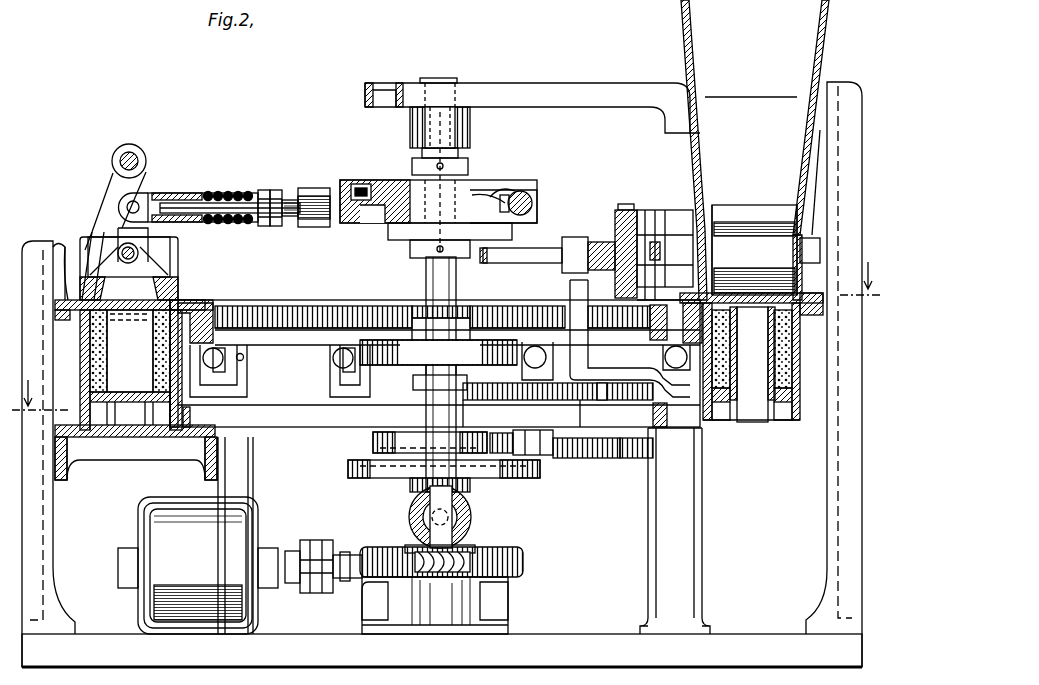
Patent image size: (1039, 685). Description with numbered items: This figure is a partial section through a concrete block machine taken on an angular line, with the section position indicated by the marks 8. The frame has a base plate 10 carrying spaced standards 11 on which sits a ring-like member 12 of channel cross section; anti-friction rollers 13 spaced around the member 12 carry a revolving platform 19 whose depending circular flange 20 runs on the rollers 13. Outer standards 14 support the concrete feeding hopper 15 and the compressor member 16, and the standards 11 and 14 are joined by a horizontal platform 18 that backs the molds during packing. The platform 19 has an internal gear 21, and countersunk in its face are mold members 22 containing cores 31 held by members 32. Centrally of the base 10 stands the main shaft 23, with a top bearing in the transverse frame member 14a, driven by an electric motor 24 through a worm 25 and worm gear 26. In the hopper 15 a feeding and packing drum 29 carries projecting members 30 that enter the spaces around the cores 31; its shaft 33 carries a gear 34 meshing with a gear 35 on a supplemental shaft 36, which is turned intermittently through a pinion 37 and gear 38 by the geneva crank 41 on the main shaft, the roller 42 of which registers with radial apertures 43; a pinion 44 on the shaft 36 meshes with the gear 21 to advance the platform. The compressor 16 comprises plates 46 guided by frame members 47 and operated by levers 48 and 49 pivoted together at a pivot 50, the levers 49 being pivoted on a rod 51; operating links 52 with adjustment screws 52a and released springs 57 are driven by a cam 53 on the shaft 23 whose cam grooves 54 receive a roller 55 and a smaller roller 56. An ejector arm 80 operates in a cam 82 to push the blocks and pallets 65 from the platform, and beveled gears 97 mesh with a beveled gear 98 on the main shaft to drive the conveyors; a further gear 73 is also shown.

The section line 8 is at (446, 350).
The base plate 10 is at (768, 636).
The standards 11 is at (253, 475).
The ring-like member 12 is at (302, 423).
The anti-friction rollers 13 is at (330, 356).
The standards 14 is at (33, 236).
The transverse frame member 14a is at (519, 83).
The concrete feeding hopper 15 is at (684, 42).
The compressor member 16 is at (143, 157).
The horizontal platform 18 is at (165, 447).
The revolving platform 19 is at (214, 306).
The depending circular flange 20 is at (222, 326).
The internal gear 21 is at (277, 305).
The mold members 22 is at (192, 297).
The main shaft 23 is at (425, 275).
The electric motor 24 is at (225, 565).
The worm 25 is at (470, 548).
The worm gear 26 is at (522, 562).
The concrete feeding and packing drum 29 is at (754, 250).
The projecting members 30 is at (750, 204).
The cores 31 is at (439, 361).
The members 32 is at (130, 445).
The shafts 33 is at (652, 245).
The gears 34 is at (620, 212).
The gear 35 is at (592, 245).
The supplemental shaft 36 is at (623, 408).
The pinion 37 is at (612, 386).
The gear 38 is at (558, 405).
The geneva crank 41 is at (430, 443).
The roller 42 is at (530, 456).
The radial apertures 43 is at (639, 458).
The pinion 44 is at (600, 313).
The plates 46 is at (152, 262).
The frame members 47 is at (160, 190).
The levers 48 is at (100, 217).
The levers 49 is at (120, 185).
The pivot 50 is at (126, 207).
The rod 51 is at (127, 152).
The operating links 52 is at (523, 195).
The adjustment screws 52a is at (273, 188).
The cam 53 is at (318, 188).
The cam grooves 54 is at (368, 212).
The roller 55 is at (360, 186).
The roller 56 is at (455, 208).
The released springs 57 is at (230, 192).
The pallets 65 is at (99, 445).
The gear 73 is at (385, 469).
The arm 80 is at (413, 380).
The cam 82 is at (438, 341).
The beveled gears 97 is at (408, 518).
The beveled gear 98 is at (471, 487).